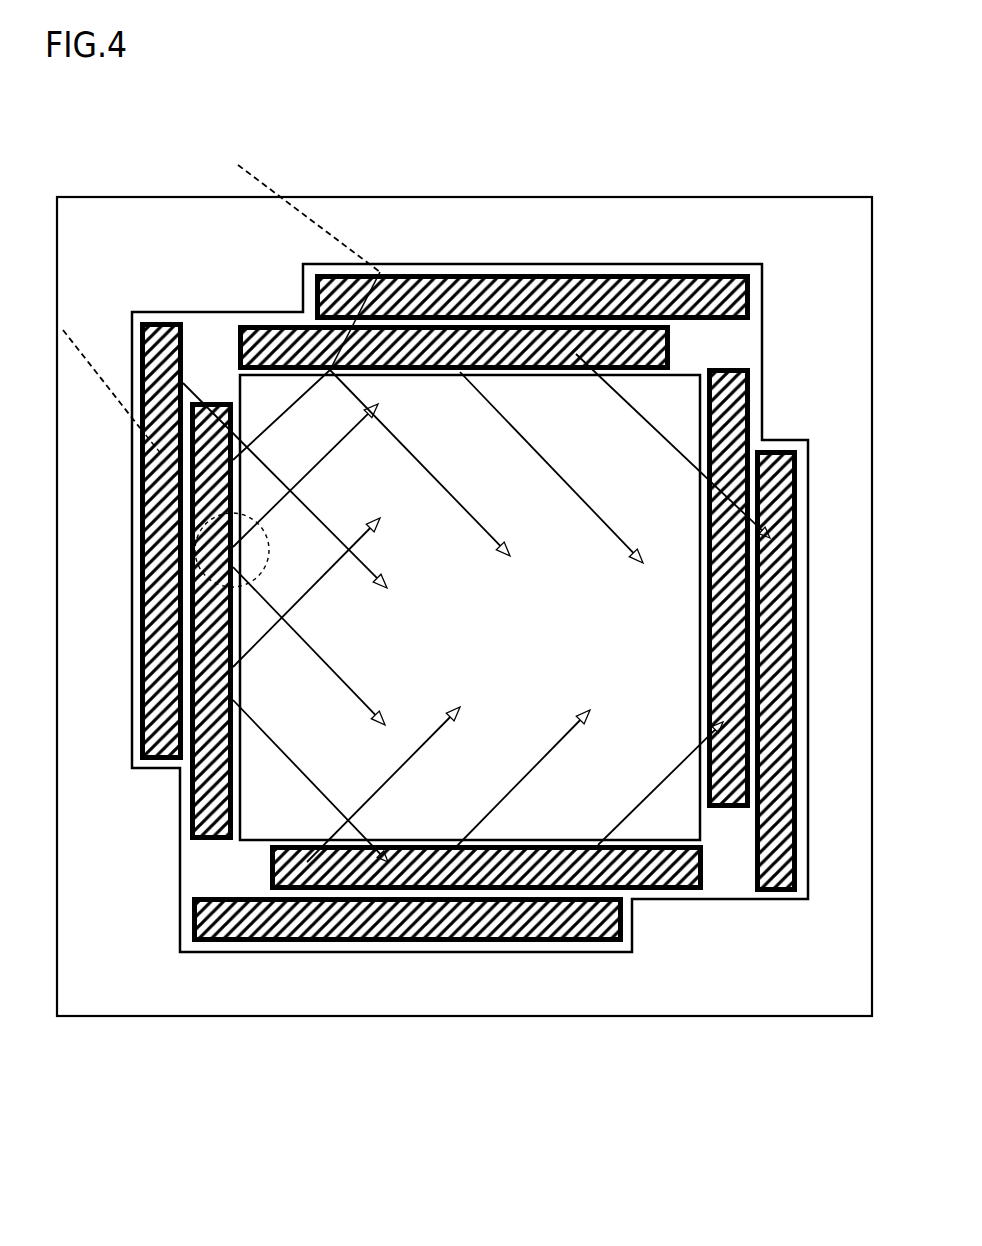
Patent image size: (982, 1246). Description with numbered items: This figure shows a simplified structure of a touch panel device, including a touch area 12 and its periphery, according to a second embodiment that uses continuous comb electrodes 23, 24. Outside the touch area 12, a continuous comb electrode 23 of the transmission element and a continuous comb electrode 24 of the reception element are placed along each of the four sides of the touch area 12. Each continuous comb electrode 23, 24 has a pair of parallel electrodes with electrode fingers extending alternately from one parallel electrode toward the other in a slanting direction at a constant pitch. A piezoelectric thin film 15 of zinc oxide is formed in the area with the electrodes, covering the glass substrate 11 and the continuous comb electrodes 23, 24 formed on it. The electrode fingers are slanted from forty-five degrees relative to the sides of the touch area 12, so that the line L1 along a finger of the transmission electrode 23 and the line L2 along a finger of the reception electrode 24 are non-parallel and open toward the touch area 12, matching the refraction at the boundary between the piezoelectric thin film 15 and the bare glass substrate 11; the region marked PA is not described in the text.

The glass substrate 11 is at (662, 203).
The touch area 12 is at (723, 277).
The piezoelectric thin film 15 is at (556, 265).
The continuous comb electrode of the transmission element 23 is at (289, 326).
The continuous comb electrode of the reception element 24 is at (455, 276).
The line along the electrode finger of the transmission electrode L1 is at (75, 342).
The line along the electrode finger of the reception electrode L2 is at (240, 170).
The propagation area PA is at (480, 527).